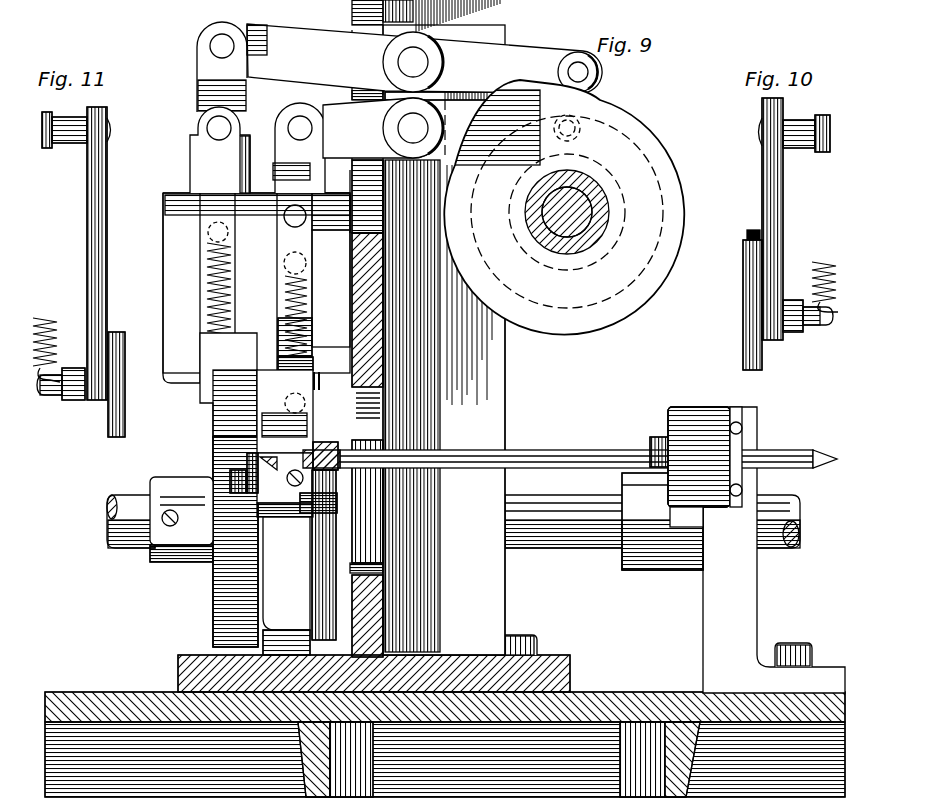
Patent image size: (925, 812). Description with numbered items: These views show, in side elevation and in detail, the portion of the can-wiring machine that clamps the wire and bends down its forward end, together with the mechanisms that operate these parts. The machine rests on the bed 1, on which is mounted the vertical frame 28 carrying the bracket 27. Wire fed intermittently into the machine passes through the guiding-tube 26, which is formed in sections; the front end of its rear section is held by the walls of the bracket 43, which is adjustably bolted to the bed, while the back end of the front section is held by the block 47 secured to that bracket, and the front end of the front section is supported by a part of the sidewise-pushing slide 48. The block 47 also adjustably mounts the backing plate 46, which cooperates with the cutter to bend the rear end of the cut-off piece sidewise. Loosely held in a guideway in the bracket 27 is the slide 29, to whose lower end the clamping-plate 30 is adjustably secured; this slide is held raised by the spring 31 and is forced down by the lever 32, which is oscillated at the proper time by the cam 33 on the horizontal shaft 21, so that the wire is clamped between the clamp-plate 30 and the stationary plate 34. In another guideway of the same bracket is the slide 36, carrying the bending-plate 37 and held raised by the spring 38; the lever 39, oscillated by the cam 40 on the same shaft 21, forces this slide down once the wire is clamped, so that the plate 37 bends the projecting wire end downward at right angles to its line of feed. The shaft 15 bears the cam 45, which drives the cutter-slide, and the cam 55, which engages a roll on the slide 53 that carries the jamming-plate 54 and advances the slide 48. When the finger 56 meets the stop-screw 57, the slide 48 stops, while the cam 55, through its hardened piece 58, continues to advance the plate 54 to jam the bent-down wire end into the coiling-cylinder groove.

In FIG. 9, the bed 1 is at (160, 717).
In FIG. 9, the shaft 15 is at (567, 530).
In FIG. 9, the horizontal shaft 21 is at (600, 190).
In FIG. 9, the guiding-tube 26 is at (563, 450).
In FIG. 9, the bracket 27 is at (337, 247).
In FIG. 9, the vertical frame 28 is at (383, 330).
In FIG. 9, the slide 29 is at (300, 287).
In FIG. 10, the slide 29 is at (778, 205).
In FIG. 9, the clamping-plate 30 is at (310, 397).
In FIG. 10, the clamping-plate 30 is at (748, 340).
In FIG. 9, the spring 31 is at (383, 347).
In FIG. 10, the spring 31 is at (823, 266).
In FIG. 9, the lever 32 is at (459, 97).
In FIG. 9, the cam 33 is at (575, 298).
In FIG. 9, the stationary plate 34 is at (340, 450).
In FIG. 9, the slide 36 is at (205, 268).
In FIG. 11, the slide 36 is at (90, 237).
In FIG. 9, the bending-plate 37 is at (230, 422).
In FIG. 11, the bending-plate 37 is at (113, 423).
In FIG. 9, the spring 38 is at (203, 303).
In FIG. 11, the spring 38 is at (53, 317).
In FIG. 9, the lever 39 is at (293, 52).
In FIG. 9, the cam 40 is at (657, 297).
In FIG. 9, the bracket 43 is at (720, 610).
In FIG. 9, the cam 45 is at (625, 472).
In FIG. 9, the backing plate 46 is at (697, 440).
In FIG. 9, the block 47 is at (690, 417).
In FIG. 9, the sidewise-pushing slide 48 is at (350, 505).
In FIG. 9, the slide 53 is at (318, 455).
In FIG. 9, the jamming-plate 54 is at (260, 460).
In FIG. 9, the cam 55 is at (213, 608).
In FIG. 9, the finger 56 is at (380, 480).
In FIG. 9, the stop-screw 57 is at (400, 490).
In FIG. 9, the hardened piece 58 is at (273, 550).